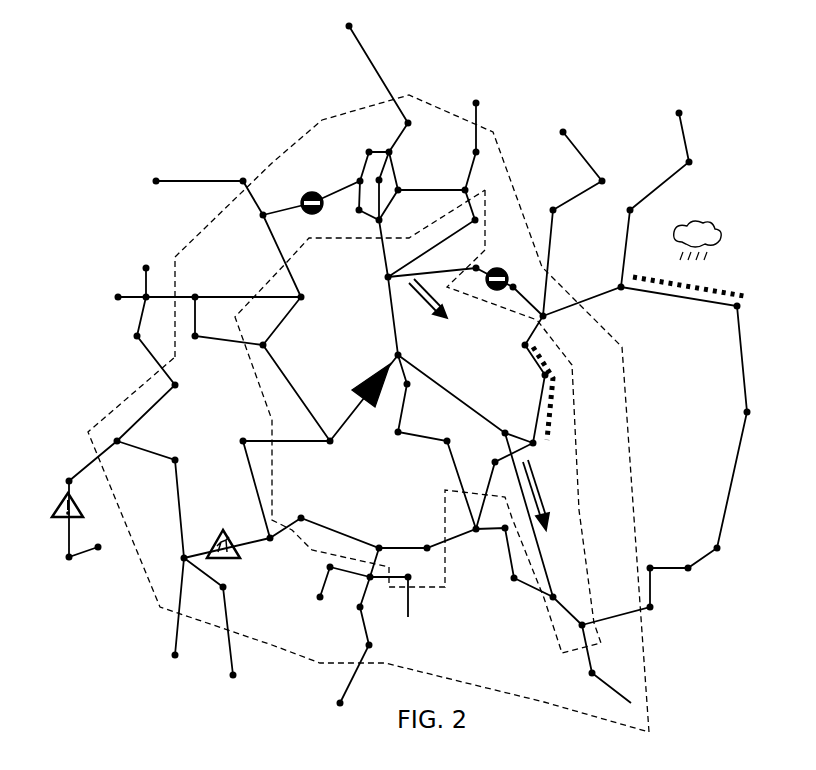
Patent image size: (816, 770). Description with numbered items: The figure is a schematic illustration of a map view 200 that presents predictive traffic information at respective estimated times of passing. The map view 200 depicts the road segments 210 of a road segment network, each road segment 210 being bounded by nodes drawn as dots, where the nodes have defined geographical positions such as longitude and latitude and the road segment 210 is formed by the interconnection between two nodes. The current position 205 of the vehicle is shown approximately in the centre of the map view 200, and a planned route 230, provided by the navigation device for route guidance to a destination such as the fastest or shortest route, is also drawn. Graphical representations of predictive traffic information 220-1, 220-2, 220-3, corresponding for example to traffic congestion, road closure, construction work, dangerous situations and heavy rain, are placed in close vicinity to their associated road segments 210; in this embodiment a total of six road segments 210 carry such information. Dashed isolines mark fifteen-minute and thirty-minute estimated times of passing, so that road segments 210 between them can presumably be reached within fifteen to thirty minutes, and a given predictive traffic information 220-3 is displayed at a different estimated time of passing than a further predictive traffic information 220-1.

The map view 200 is at (556, 70).
The current position 205 is at (370, 378).
The road segments 210 is at (192, 185).
The predictive traffic information 220-1 is at (530, 362).
The predictive traffic information 220-2 is at (310, 193).
The predictive traffic information 220-3 is at (59, 491).
The planned route 230 is at (428, 364).